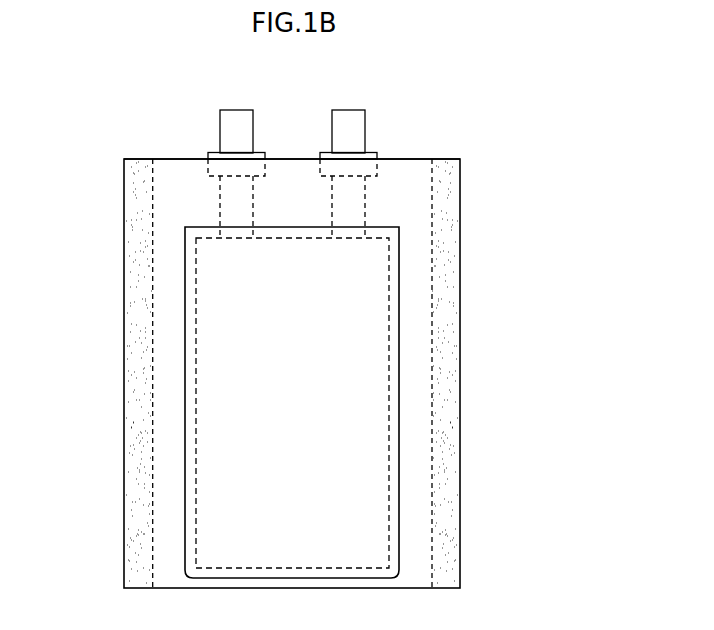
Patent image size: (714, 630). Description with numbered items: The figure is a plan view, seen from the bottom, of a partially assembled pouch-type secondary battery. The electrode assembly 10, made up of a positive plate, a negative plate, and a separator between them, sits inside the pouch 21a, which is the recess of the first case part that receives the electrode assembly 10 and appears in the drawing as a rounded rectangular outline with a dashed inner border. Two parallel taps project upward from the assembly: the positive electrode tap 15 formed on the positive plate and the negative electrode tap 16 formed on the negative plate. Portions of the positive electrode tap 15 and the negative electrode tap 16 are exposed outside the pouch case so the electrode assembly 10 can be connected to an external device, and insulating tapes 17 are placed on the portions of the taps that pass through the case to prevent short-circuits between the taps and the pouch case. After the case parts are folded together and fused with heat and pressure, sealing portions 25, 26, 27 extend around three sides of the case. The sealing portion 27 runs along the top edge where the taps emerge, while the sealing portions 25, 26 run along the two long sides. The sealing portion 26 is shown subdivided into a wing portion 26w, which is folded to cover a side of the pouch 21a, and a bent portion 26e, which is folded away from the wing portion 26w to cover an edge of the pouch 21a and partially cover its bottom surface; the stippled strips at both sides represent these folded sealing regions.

The electrode assembly 10 is at (210, 343).
The positive electrode tap 15 is at (348, 120).
The negative electrode tap 16 is at (237, 117).
The insulating tape 17 is at (215, 155).
The pouch 21a is at (391, 392).
The sealing portion 25 is at (124, 593).
The sealing portion 26 is at (329, 391).
The wing portion 26w is at (410, 287).
The bent portion 26e is at (447, 340).
The sealing portion 27 is at (292, 157).